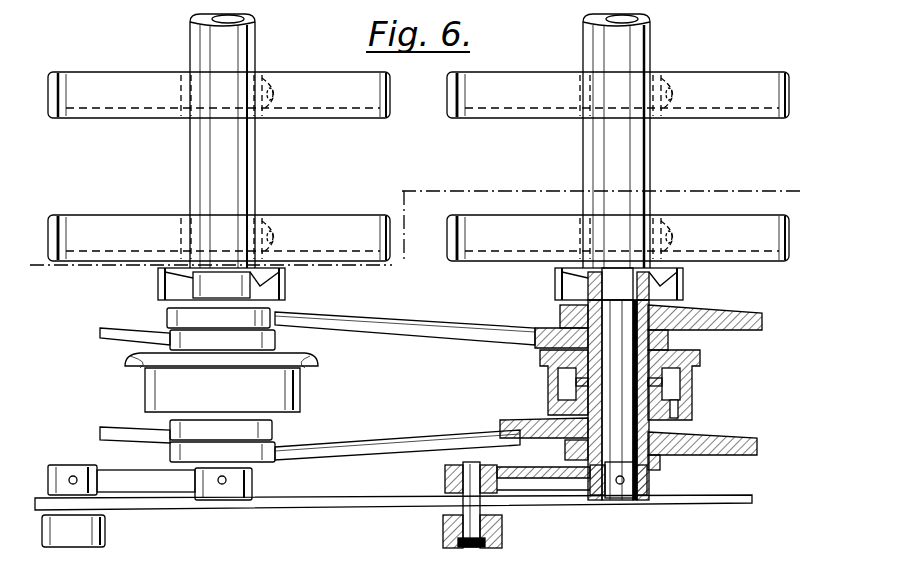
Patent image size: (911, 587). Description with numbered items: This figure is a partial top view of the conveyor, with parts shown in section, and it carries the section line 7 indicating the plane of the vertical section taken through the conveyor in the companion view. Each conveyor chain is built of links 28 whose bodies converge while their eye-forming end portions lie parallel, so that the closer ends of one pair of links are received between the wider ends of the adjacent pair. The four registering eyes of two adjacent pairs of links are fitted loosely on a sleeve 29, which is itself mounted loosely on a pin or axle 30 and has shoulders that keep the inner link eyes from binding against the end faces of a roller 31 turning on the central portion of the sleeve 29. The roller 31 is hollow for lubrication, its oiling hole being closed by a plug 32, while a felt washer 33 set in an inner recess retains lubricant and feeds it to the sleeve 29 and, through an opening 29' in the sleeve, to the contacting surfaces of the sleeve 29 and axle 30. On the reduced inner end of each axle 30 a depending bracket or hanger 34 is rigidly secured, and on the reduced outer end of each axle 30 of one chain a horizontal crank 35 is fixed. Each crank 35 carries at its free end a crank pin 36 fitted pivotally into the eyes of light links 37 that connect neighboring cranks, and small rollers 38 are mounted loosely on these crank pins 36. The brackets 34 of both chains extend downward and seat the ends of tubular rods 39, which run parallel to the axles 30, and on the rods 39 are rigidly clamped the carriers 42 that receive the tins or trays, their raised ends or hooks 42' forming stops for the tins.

The section line 7— 7 is at (36, 254).
The links 28 is at (115, 428).
The sleeve 29 is at (702, 460).
The opening 29' is at (537, 430).
The pin or axle 30 is at (670, 341).
The roller 31 is at (548, 372).
The plug 32 is at (676, 418).
The washer 33 is at (656, 382).
The depending bracket or hanger 34 is at (287, 284).
The crank 35 is at (138, 460).
The crank pin 36 is at (482, 530).
The light links 37 is at (340, 510).
The small rollers 38 is at (108, 533).
The cross-members or tubular rods 39 is at (245, 172).
The carriers 42 is at (418, 153).
The raised ends or hooks 42' is at (429, 184).